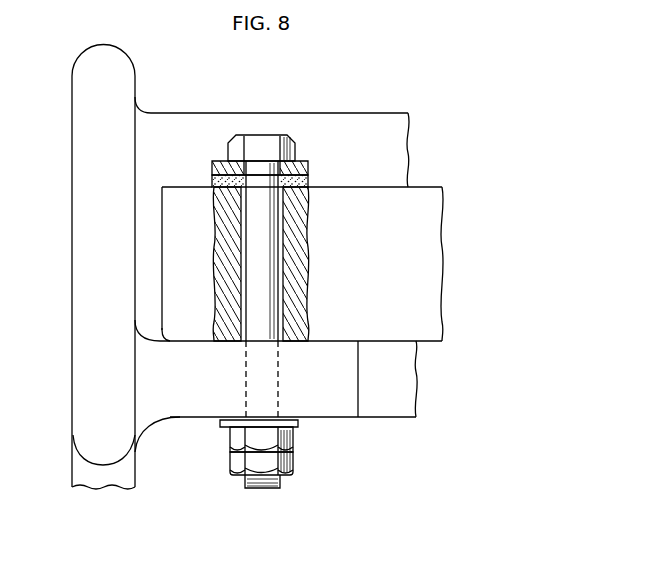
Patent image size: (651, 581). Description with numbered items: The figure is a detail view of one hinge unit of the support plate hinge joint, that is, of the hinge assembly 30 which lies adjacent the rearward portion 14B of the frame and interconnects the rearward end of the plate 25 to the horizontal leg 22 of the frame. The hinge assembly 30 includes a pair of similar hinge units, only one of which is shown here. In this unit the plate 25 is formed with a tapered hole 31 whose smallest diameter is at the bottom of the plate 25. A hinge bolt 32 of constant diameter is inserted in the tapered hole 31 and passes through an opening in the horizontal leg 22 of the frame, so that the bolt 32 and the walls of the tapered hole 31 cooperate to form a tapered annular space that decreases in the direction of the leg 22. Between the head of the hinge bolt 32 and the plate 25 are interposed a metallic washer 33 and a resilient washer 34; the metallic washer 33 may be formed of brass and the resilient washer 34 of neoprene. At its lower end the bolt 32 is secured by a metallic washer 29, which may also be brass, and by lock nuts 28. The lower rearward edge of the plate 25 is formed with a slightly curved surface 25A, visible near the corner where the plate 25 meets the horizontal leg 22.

The rearward portion of the frame 14B is at (85, 350).
The horizontal leg of the frame 22 is at (318, 368).
The plate 25 is at (353, 200).
The slightly curved surface 25A is at (175, 338).
The lock nuts 28 is at (285, 456).
The metallic washer 29 is at (222, 425).
The hinge assembly 30 is at (288, 480).
The tapered hole 31 is at (285, 225).
The hinge bolt 32 is at (255, 280).
The metallic washer 33 is at (304, 162).
The resilient washer 34 is at (213, 180).